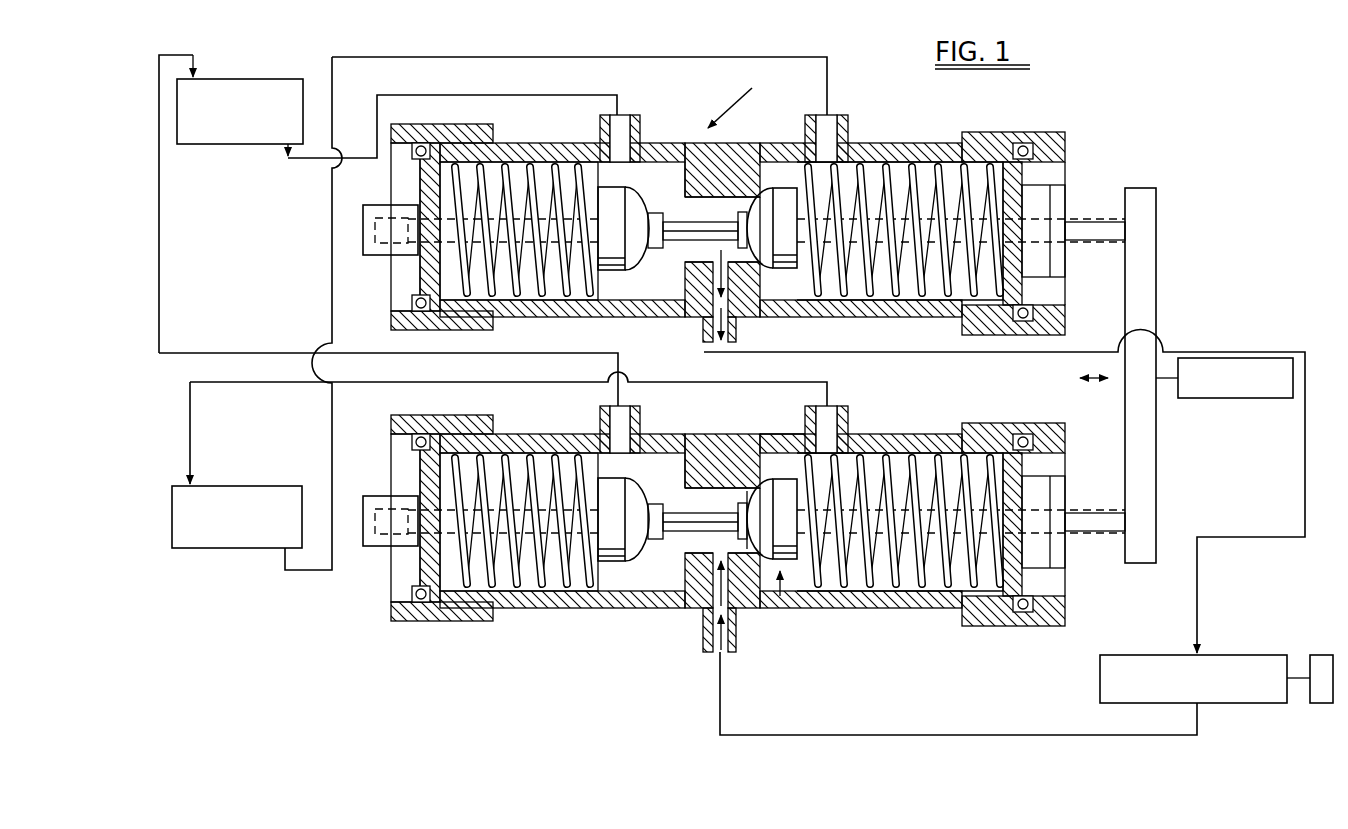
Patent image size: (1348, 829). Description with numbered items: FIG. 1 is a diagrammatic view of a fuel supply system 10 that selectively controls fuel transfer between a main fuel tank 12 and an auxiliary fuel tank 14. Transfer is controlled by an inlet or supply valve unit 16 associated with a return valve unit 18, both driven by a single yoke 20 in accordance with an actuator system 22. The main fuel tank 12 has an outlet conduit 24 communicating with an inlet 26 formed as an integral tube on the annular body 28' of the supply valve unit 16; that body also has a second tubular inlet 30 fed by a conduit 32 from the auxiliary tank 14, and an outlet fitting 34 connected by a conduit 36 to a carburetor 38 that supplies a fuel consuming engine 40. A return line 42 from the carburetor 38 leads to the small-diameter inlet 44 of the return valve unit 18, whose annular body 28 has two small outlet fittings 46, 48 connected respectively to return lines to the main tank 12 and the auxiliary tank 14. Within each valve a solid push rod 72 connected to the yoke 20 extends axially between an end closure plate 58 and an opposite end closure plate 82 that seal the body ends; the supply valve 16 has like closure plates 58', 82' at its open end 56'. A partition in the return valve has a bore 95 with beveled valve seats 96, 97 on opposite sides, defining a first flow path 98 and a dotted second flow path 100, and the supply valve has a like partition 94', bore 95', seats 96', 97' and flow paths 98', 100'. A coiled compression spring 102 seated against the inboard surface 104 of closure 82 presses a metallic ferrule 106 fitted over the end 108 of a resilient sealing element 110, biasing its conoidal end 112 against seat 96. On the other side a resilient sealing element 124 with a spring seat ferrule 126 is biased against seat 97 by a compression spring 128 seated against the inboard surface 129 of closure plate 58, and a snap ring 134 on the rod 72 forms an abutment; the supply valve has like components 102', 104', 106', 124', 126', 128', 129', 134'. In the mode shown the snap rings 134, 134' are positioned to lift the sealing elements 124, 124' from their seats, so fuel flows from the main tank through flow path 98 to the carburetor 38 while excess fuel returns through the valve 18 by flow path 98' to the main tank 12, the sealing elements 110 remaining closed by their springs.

The fuel supply system 10 is at (736, 100).
The main fuel tank 12 is at (268, 78).
The auxiliary fuel tank 14 is at (268, 548).
The inlet or supply valve unit 16 is at (861, 198).
The return valve unit 18 is at (623, 499).
The yoke 20 is at (1148, 232).
The actuator system 22 is at (1222, 358).
The outlet conduit 24 is at (398, 93).
The inlet 26 is at (647, 116).
The annular body 28 is at (600, 552).
The annular body 28' is at (712, 200).
The second tubular inlet 30 is at (848, 130).
The conduit 32 is at (332, 234).
The outlet fitting 34 is at (742, 330).
The conduit 36 is at (992, 352).
The carburetor 38 is at (1105, 662).
The fuel consuming engine 40 is at (1318, 655).
The return line 42 is at (790, 735).
The inlet 44 is at (735, 650).
The outlet fitting 46 is at (637, 422).
The outlet fitting 48 is at (845, 411).
The open end 56' is at (1038, 238).
The end closure plate 58 is at (732, 574).
The end closure plate 58' is at (707, 256).
The solid push rod 72 is at (732, 468).
The end closure plate 82 is at (1059, 514).
The end closure plate 82' is at (1074, 229).
The partition 94' is at (730, 183).
The bore 95 is at (749, 505).
The bore 95' is at (708, 316).
The valve seat 96 is at (764, 569).
The valve seat 96' is at (802, 143).
The valve seat 97 is at (684, 606).
The valve seat 97' is at (687, 316).
The first flow path 98 is at (719, 475).
The first flow path 98' is at (723, 108).
The second flow path 100 is at (817, 462).
The second flow path 100' is at (900, 166).
The coiled compression spring 102 is at (908, 483).
The coiled compression spring 102' is at (932, 191).
The inboard surface 104 is at (1035, 494).
The inboard surface 104' is at (1067, 201).
The metallic ferrule 106 is at (814, 580).
The metallic ferrule 106' is at (807, 269).
The end 108 is at (900, 551).
The resilient valve sealing element 110 is at (812, 645).
The conoidal end 112 is at (794, 396).
The resilient sealing element 124 is at (651, 566).
The resilient sealing element 124' is at (668, 268).
The spring seat ferrule 126 is at (522, 497).
The spring seat ferrule 126' is at (519, 165).
The compression spring 128 is at (522, 488).
The compression spring 128' is at (522, 149).
The inboard surface 129 is at (442, 506).
The inboard surface 129' is at (415, 233).
The snap ring 134 is at (658, 632).
The snap ring 134' is at (600, 89).